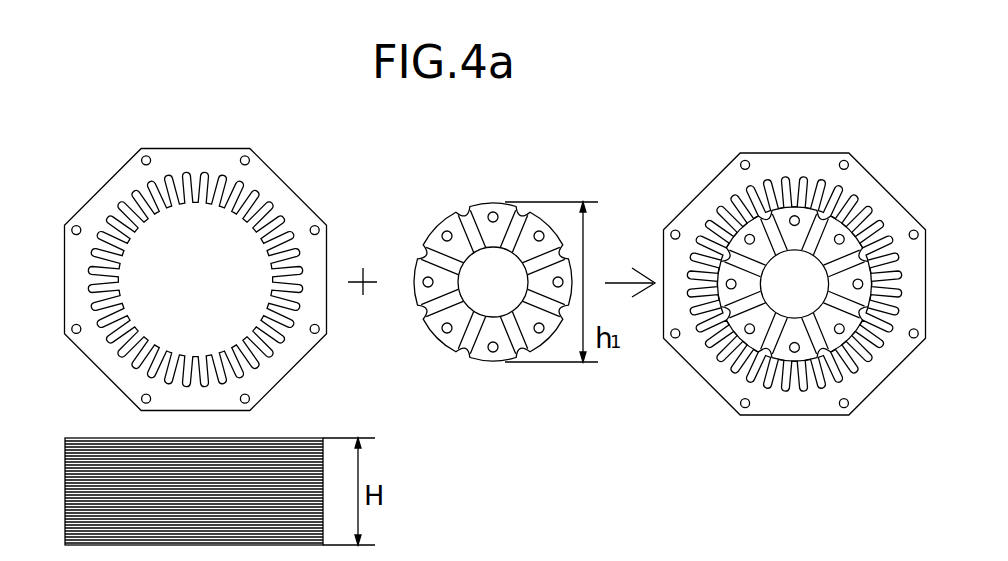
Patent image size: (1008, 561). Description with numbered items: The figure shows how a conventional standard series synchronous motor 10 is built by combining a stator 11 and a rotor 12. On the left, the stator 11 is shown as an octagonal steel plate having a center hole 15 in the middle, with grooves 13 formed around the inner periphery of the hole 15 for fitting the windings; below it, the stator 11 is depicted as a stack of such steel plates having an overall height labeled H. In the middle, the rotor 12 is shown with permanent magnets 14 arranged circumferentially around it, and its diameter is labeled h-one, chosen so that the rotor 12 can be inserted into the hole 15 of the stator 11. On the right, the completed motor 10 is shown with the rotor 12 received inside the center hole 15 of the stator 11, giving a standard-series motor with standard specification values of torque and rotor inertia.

The standard series synchronous motor 10 is at (809, 146).
The stator 11 is at (199, 244).
The rotor 12 is at (485, 246).
The grooves 13 is at (186, 177).
The permanent magnets 14 is at (440, 224).
The center hole 15 is at (185, 232).